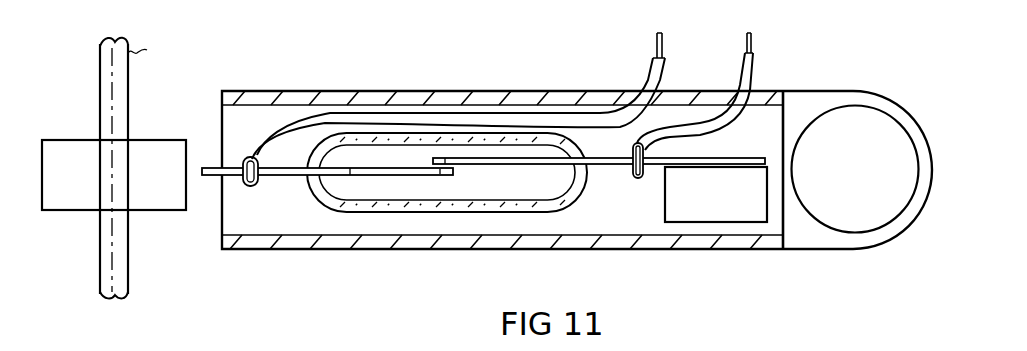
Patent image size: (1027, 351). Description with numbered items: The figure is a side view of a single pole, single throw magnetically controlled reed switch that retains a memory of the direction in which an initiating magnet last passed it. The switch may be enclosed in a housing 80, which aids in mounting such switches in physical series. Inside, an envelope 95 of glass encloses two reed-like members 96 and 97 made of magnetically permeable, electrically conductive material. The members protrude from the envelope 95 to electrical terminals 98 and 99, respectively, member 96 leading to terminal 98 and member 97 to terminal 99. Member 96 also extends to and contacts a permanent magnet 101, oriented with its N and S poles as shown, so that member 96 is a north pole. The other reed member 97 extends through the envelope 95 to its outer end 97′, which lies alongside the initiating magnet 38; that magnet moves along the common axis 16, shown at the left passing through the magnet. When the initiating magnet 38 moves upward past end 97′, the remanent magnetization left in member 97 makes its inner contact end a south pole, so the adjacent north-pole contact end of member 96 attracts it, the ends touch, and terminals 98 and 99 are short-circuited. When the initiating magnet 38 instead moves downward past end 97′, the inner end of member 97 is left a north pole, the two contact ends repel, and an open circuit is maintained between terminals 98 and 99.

The common axis 16 is at (114, 95).
The initiating magnet 38 is at (143, 212).
The housing 80 is at (389, 89).
The envelope 95 is at (486, 212).
The reed-like member 96 is at (534, 165).
The reed-like member 97 is at (350, 164).
The end of member 97 97′ is at (272, 112).
The electrical terminal 98 is at (638, 178).
The electrical terminal 99 is at (252, 186).
The permanent magnet 101 is at (713, 213).